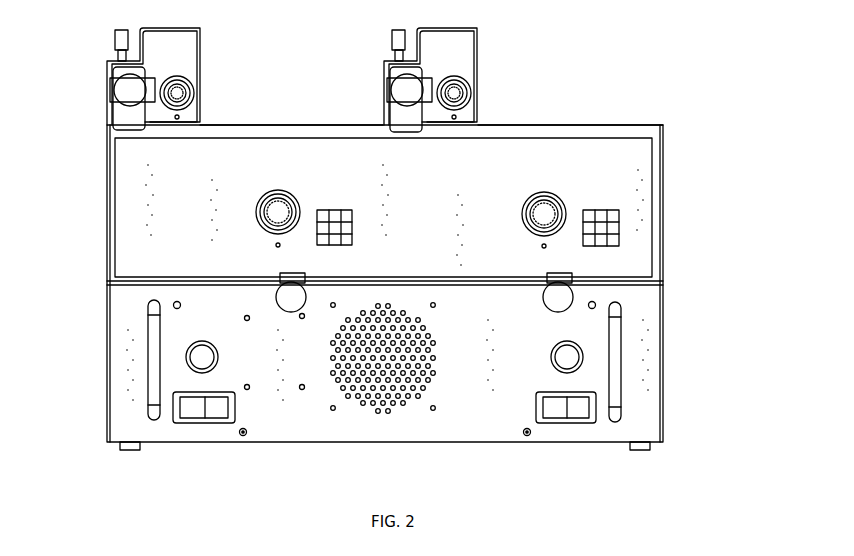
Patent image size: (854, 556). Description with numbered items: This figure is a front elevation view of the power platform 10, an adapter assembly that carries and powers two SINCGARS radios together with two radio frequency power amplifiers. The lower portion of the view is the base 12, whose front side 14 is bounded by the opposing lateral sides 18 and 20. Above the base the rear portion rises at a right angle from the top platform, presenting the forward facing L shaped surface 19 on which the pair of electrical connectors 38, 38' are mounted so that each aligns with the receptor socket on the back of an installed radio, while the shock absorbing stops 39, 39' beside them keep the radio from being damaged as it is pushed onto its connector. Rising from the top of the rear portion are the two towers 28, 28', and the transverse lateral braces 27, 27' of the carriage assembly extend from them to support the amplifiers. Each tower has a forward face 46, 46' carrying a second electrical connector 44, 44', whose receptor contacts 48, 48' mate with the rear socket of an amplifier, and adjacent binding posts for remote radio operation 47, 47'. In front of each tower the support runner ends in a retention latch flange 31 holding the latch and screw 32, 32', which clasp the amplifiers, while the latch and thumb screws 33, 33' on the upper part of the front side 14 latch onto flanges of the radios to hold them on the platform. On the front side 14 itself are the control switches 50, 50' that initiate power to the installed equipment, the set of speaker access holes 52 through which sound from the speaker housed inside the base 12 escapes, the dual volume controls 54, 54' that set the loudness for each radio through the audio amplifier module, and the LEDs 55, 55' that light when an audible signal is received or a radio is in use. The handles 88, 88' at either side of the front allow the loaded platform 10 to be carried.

The power platform 10 is at (668, 86).
The base 12 is at (668, 340).
The front side 14 is at (294, 438).
The lateral side 18 is at (664, 399).
The L shaped surface 19 is at (624, 152).
The lateral side 20 is at (106, 397).
The lateral brace 27 is at (291, 94).
The lateral brace 27' is at (570, 94).
The tower 28 is at (182, 69).
The tower 28' is at (461, 69).
The retention latch flange 31 is at (128, 113).
The latch and screw 32 is at (92, 90).
The latch and screw 32' is at (369, 99).
The latch and thumb screw 33 is at (267, 280).
The latch and thumb screw 33' is at (530, 280).
The electrical connector 38 is at (271, 201).
The electrical connector 38' is at (535, 202).
The shock absorbing stop 39 is at (334, 200).
The shock absorbing stop 39' is at (601, 201).
The second electrical connector 44 is at (209, 96).
The second electrical connector 44' is at (488, 96).
The forward face 46 is at (204, 85).
The forward face 46' is at (483, 85).
The binding post for remote radio operation 47 is at (80, 45).
The binding post for remote radio operation 47' is at (356, 45).
The receptor contacts 48 is at (213, 100).
The receptor contacts 48' is at (492, 100).
The control switch 50 is at (204, 433).
The control switch 50' is at (569, 433).
The speaker access holes 52 is at (383, 413).
The volume control 54 is at (145, 357).
The volume control 54' is at (634, 357).
The LED 55 is at (126, 286).
The LED 55' is at (653, 286).
The handle 88 is at (109, 368).
The handle 88' is at (663, 369).